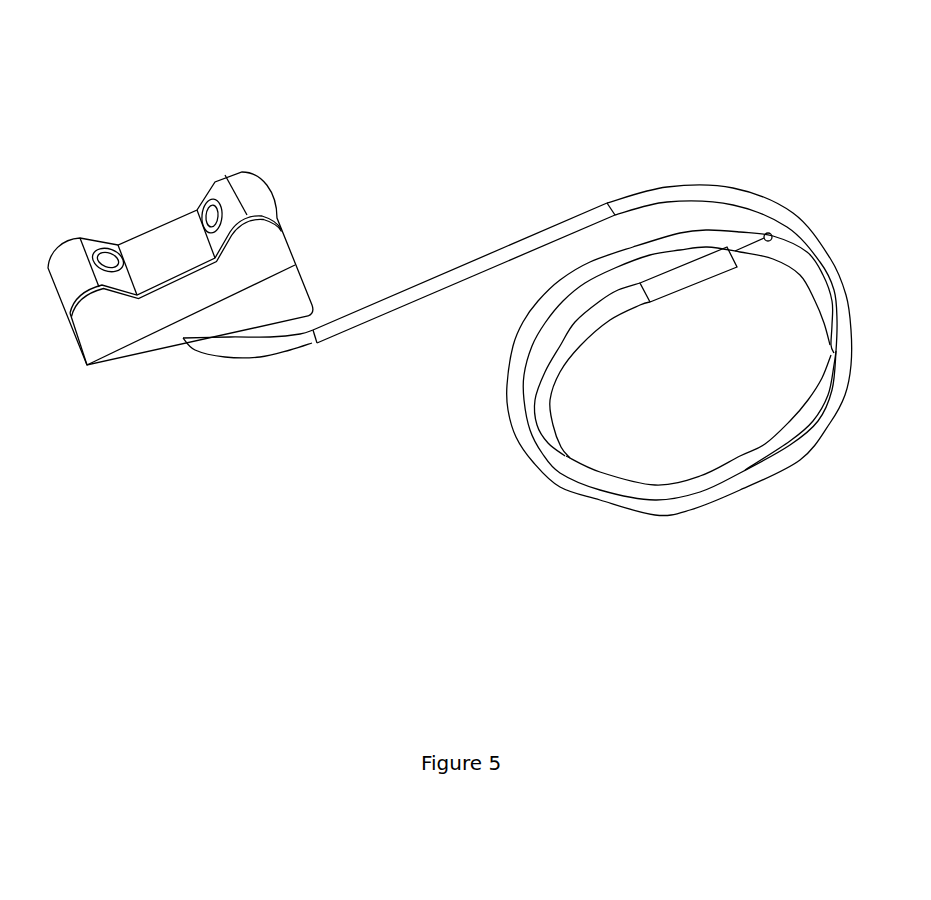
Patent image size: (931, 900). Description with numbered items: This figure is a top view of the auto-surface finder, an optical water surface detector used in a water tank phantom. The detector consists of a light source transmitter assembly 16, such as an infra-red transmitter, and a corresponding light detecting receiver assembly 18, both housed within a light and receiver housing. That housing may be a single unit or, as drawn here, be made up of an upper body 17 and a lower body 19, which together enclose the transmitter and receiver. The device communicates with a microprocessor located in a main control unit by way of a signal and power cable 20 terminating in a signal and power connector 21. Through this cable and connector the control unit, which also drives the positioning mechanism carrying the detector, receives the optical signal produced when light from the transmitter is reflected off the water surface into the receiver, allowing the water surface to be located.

The light source transmitter assembly 16 is at (97, 249).
The upper body 17 is at (162, 222).
The light detecting receiver assembly 18 is at (213, 187).
The lower body 19 is at (311, 289).
The signal and power cable 20 is at (515, 240).
The signal and power connector 21 is at (682, 262).